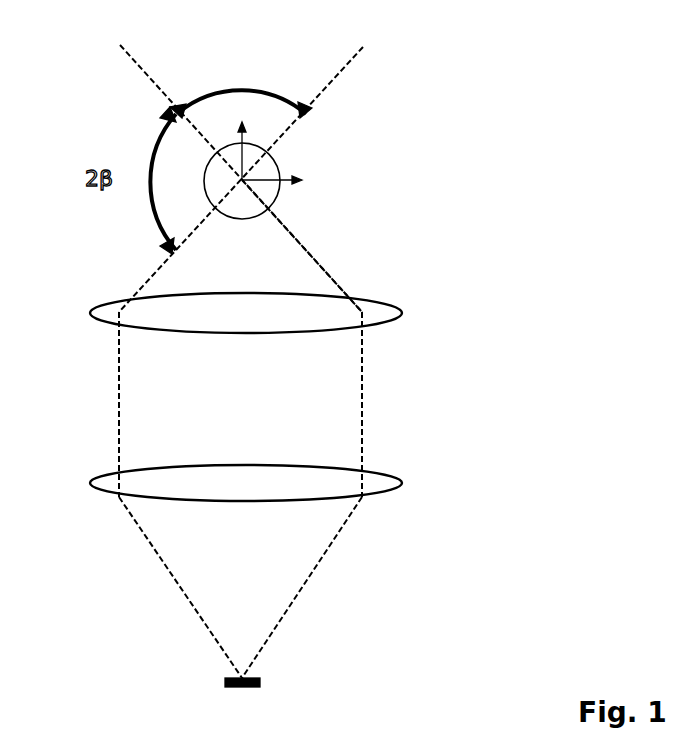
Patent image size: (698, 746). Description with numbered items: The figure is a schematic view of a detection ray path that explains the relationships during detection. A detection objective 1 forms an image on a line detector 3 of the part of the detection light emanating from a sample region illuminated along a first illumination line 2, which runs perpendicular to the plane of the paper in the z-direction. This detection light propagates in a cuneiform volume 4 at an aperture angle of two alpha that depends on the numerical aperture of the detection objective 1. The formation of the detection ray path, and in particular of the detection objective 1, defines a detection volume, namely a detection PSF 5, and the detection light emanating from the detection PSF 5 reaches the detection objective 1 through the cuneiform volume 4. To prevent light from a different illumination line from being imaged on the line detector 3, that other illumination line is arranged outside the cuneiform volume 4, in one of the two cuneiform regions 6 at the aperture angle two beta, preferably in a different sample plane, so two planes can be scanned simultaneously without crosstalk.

The detection objective 1 is at (403, 347).
The first illumination line 2 is at (212, 208).
The line detector 3 is at (260, 685).
The cuneiform volume 4 is at (291, 260).
The detection PSF 5 is at (240, 110).
The cuneiform regions 6 is at (217, 361).